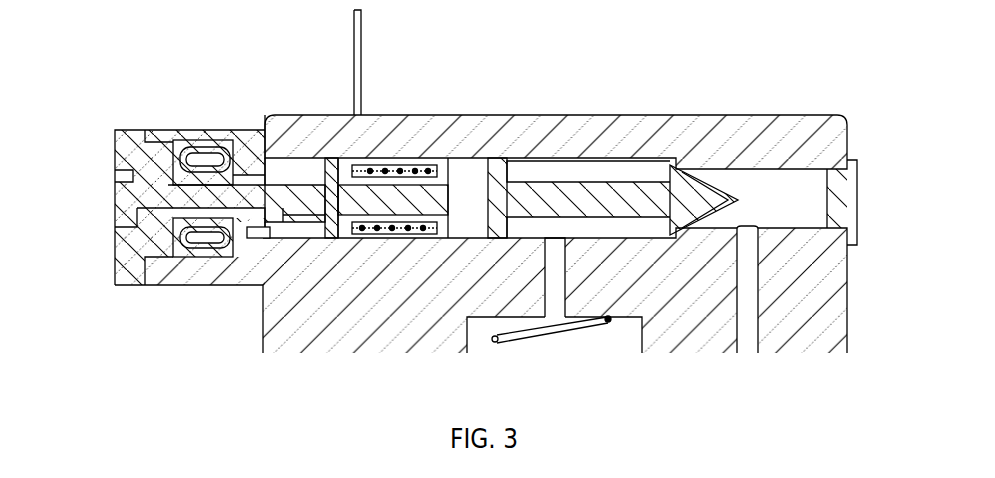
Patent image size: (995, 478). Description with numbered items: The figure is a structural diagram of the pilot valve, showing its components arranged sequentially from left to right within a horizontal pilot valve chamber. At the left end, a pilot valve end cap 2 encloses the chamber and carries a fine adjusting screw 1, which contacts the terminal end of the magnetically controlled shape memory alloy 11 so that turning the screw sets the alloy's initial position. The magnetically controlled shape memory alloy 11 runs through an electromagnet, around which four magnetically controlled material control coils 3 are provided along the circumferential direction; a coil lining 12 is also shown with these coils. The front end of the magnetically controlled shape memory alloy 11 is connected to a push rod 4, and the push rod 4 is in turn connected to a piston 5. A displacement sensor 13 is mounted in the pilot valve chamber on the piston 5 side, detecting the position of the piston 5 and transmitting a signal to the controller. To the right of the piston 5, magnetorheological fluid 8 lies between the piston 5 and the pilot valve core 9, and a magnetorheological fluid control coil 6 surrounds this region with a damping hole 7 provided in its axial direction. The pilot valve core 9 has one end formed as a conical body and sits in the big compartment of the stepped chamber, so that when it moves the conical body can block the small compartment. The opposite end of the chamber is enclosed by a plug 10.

The fine adjusting screw 1 is at (113, 196).
The pilot valve end cap 2 is at (128, 128).
The magnetically controlled material control coil 3 is at (218, 150).
The push rod 4 is at (272, 176).
The piston 5 is at (330, 163).
The magnetorheological fluid control coil 6 is at (383, 167).
The damping hole 7 is at (430, 196).
The magnetorheological fluid 8 is at (472, 188).
The pilot valve core 9 is at (640, 182).
The plug 10 is at (852, 155).
The magnetically controlled shape memory alloy 11 is at (178, 211).
The coil lining 12 is at (173, 243).
The displacement sensor 13 is at (258, 236).